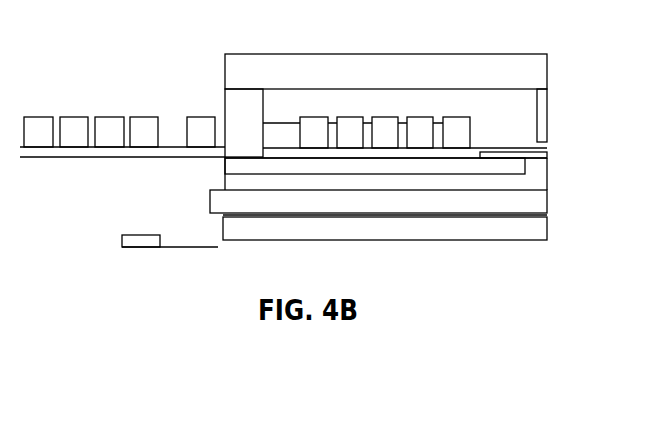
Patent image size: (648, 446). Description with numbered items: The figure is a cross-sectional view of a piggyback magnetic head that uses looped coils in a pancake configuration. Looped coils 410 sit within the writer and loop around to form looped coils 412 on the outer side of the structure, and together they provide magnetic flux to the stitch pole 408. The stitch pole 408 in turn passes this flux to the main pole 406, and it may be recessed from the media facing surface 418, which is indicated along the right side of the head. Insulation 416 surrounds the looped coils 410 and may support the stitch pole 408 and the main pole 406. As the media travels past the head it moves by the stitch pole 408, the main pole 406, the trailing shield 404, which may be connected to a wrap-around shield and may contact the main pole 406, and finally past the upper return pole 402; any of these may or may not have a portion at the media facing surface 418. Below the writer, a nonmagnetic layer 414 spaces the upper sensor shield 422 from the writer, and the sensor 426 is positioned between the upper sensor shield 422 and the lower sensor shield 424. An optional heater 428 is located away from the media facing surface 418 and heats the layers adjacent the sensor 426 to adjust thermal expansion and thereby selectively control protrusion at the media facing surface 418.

The upper return pole 402 is at (458, 54).
The trailing shield 404 is at (548, 124).
The main pole 406 is at (547, 154).
The stitch pole 408 is at (236, 167).
The looped coils 410 is at (353, 118).
The looped coils 412 is at (33, 115).
The nonmagnetic layer 414 is at (542, 181).
The insulation 416 is at (513, 123).
The media facing surface 418 is at (559, 64).
The upper sensor shield 422 is at (210, 201).
The sensor shield 424 is at (223, 223).
The sensor 426 is at (536, 214).
The heater 428 is at (143, 233).